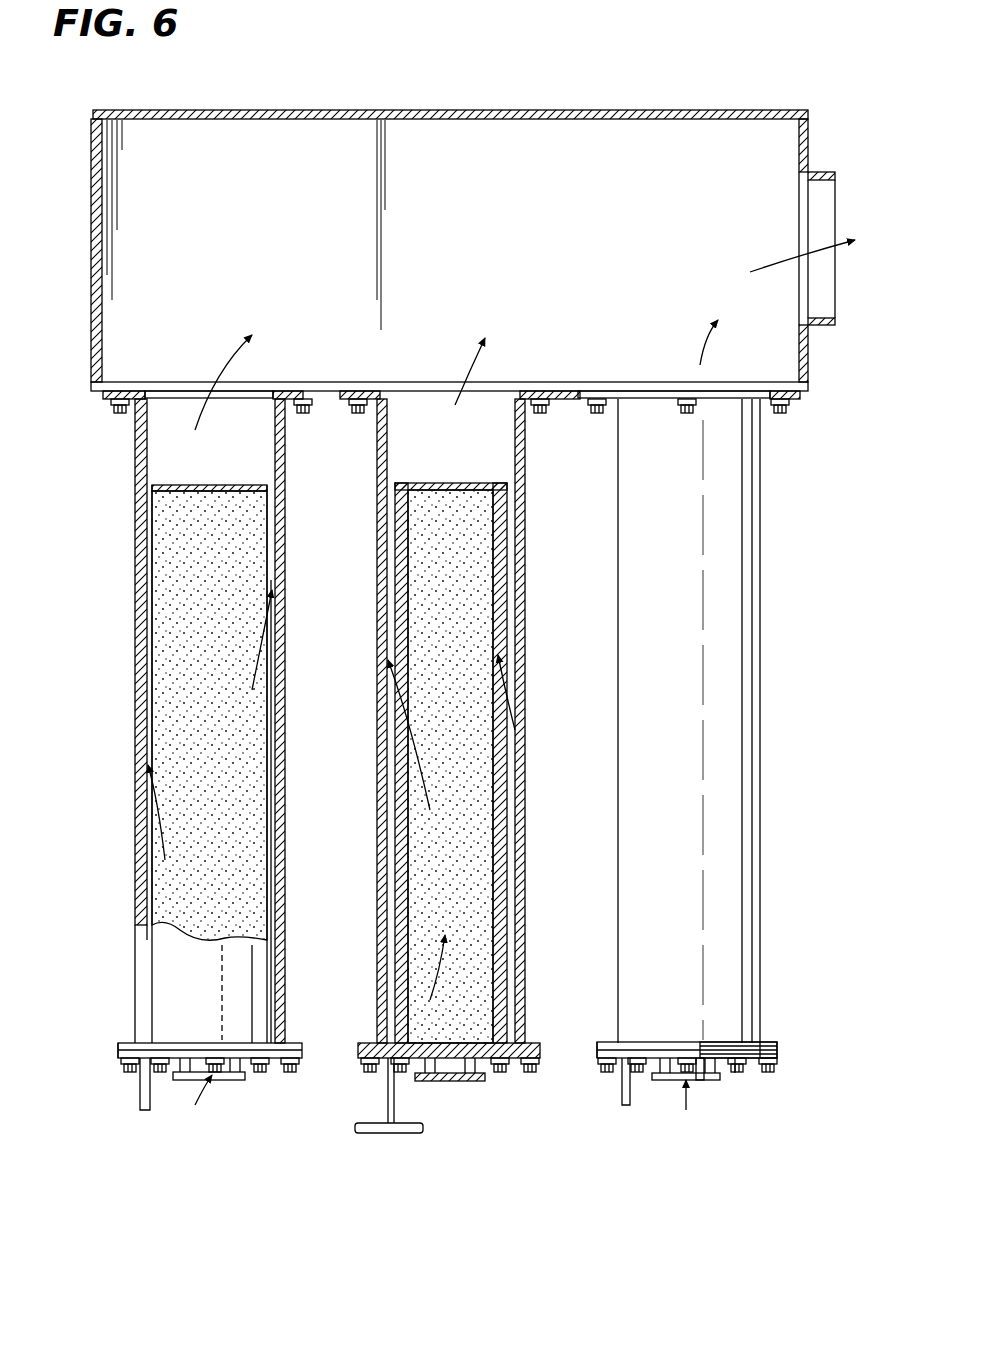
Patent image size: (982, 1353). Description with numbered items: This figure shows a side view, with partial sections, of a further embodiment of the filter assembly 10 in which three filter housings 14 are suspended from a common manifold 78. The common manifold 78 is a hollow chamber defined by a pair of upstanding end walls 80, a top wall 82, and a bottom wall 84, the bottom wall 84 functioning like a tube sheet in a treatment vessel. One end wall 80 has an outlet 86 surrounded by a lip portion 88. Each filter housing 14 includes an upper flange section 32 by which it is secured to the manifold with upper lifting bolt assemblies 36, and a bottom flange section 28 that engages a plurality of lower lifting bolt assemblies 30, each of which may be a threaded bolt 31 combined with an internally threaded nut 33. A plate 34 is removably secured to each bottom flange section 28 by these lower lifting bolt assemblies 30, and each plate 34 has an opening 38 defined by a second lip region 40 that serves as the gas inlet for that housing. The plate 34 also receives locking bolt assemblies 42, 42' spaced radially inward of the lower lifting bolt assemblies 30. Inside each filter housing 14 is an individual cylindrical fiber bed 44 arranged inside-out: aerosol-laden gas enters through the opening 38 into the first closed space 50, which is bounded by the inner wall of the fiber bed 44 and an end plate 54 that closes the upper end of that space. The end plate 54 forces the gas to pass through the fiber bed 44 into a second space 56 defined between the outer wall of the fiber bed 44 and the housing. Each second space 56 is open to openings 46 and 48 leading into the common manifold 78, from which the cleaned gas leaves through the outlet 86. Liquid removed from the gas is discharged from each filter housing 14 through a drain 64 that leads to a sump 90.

The filter assembly 10 is at (122, 758).
The filter housing 14 is at (348, 822).
The bottom flange section 28 is at (130, 1043).
The lower lifting bolt assembly 30 is at (122, 1068).
The threaded bolt 31 is at (775, 1065).
The upper flange section 32 is at (762, 400).
The internally threaded nut 33 is at (780, 1056).
The plate 34 is at (118, 1050).
The upper lifting bolt assembly 36 is at (118, 416).
The opening 38 is at (458, 1080).
The second lip region 40 is at (700, 1082).
The locking bolt assembly 42 is at (428, 1121).
The locking bolt assembly 42' is at (746, 1103).
The fiber bed 44 is at (255, 715).
The opening 46 is at (203, 385).
The opening 48 is at (185, 395).
The first closed space 50 is at (500, 948).
The end plate 54 is at (215, 486).
The second space 56 is at (395, 650).
The drain 64 is at (142, 1105).
The common manifold 78 is at (98, 250).
The end wall 80 is at (100, 205).
The top wall 82 is at (628, 110).
The bottom wall 84 is at (800, 398).
The outlet 86 is at (822, 192).
The lip portion 88 is at (835, 322).
The sump 90 is at (392, 1135).